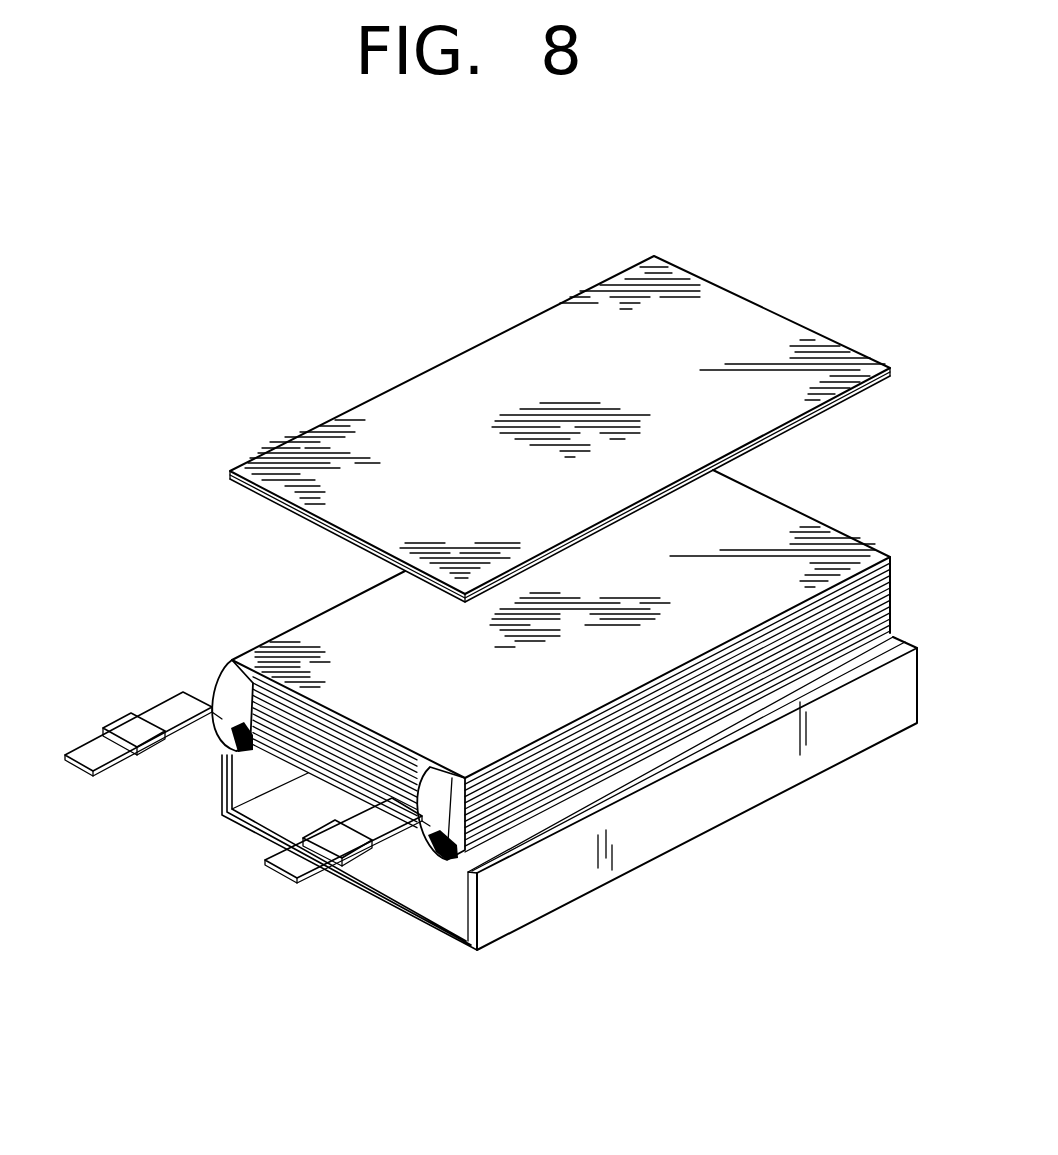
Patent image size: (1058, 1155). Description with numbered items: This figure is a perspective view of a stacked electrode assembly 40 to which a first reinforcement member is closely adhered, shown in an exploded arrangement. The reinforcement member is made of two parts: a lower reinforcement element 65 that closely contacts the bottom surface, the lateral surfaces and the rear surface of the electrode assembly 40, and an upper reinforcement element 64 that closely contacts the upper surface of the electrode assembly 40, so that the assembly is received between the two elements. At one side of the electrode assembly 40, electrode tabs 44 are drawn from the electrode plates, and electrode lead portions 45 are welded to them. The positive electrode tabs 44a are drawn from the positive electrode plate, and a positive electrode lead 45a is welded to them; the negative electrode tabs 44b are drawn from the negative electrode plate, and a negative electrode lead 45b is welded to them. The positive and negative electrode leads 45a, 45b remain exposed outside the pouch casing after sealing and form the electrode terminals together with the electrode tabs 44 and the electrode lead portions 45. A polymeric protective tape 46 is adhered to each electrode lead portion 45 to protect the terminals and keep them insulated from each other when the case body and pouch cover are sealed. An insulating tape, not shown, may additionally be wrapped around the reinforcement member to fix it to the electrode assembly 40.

The electrode assembly 40 is at (822, 540).
The electrode tabs 44 is at (281, 688).
The positive electrode tabs 44a is at (232, 690).
The negative electrode tabs 44b is at (437, 788).
The electrode lead portions 45 is at (230, 827).
The positive electrode lead 45a is at (82, 775).
The negative electrode lead 45b is at (273, 872).
The polymeric protective tape 46 is at (130, 725).
The upper reinforcement element 64 is at (331, 400).
The lower reinforcement element 65 is at (697, 822).